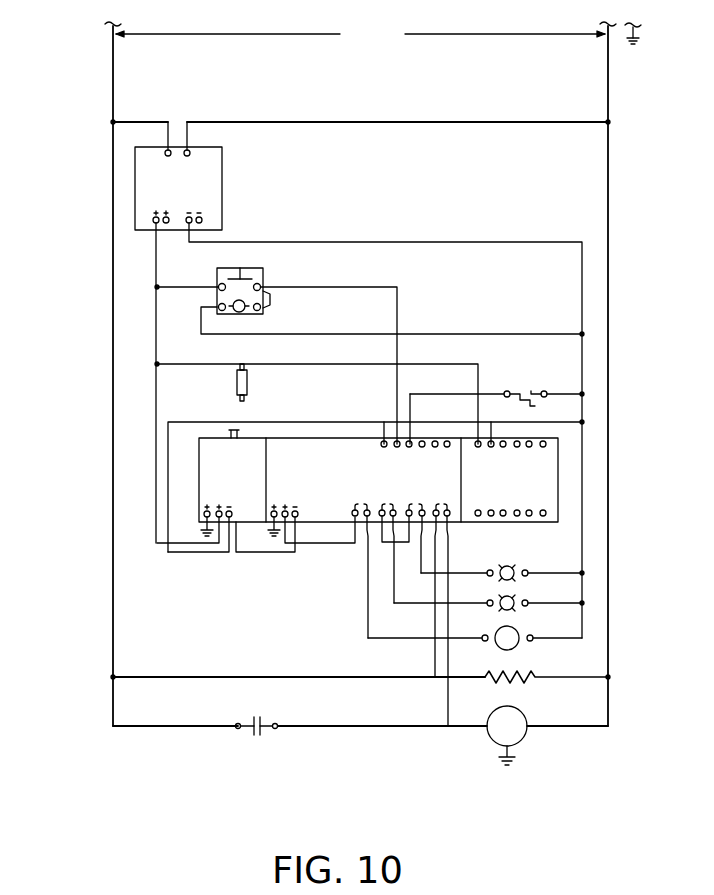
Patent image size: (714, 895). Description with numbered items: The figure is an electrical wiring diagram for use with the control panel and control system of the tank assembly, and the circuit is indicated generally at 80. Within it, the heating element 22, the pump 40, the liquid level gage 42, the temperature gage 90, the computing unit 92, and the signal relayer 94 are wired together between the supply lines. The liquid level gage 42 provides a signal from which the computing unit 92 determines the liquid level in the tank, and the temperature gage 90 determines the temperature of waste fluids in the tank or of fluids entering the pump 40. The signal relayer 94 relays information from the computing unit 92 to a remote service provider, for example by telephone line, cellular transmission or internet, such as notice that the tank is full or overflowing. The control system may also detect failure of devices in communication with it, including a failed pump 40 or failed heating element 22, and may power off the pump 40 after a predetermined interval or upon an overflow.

The control circuit system 80 is at (113, 628).
The liquid level gage 42 is at (365, 311).
The signal relayer 94 is at (363, 410).
The computing unit 92 is at (342, 517).
The temperature gage 90 is at (534, 386).
The heating element 22 is at (595, 709).
The pump 40 is at (480, 722).